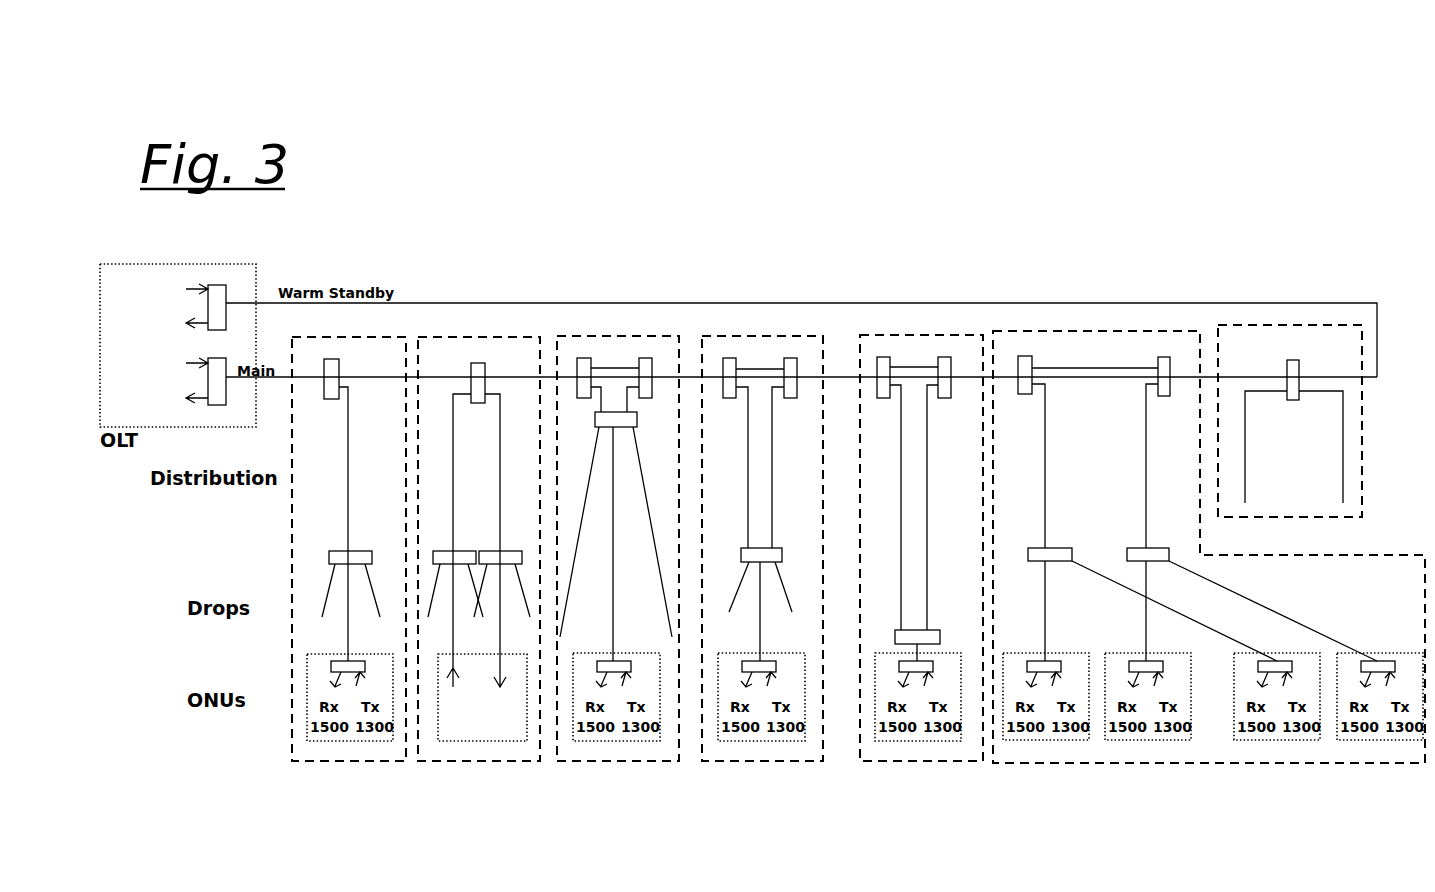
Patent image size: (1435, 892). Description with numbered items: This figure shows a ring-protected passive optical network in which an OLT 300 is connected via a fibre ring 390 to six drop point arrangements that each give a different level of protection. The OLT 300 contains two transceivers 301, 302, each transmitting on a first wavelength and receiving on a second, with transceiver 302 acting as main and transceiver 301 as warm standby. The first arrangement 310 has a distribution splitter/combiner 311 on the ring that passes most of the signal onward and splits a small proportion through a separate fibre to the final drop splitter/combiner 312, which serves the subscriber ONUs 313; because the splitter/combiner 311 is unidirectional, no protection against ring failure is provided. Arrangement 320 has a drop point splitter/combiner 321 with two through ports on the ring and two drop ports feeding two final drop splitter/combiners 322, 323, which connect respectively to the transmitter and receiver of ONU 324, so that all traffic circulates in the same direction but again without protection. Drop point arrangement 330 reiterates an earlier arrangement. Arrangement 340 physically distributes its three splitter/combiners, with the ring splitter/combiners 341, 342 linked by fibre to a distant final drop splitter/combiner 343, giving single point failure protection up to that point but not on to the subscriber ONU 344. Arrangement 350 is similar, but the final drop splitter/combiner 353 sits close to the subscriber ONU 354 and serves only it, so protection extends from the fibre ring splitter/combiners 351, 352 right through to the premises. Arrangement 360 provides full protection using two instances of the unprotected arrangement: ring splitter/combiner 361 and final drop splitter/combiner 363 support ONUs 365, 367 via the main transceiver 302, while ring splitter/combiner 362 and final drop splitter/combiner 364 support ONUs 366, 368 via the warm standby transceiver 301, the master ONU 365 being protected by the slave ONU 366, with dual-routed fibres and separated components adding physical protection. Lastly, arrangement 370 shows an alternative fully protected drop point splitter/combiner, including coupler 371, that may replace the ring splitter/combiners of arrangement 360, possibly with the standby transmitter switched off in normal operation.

The OLT 300 is at (178, 337).
The transceiver 301 is at (216, 298).
The transceiver 302 is at (215, 392).
The first drop point arrangement 310 is at (349, 562).
The distribution splitter/combiner 311 is at (349, 506).
The final drop splitter/combiner 312 is at (344, 571).
The subscriber ONU 313 is at (350, 707).
The drop point arrangement 320 is at (479, 562).
The drop point splitter/combiner 321 is at (484, 521).
The second final drop splitter/combiner 322 is at (453, 573).
The first final drop splitter/combiner 323 is at (502, 573).
The ONU 324 is at (482, 707).
The drop point arrangement 330 is at (618, 560).
The drop point arrangement 340 is at (762, 560).
The ring splitter/combiner 341 is at (737, 444).
The ring splitter/combiner 342 is at (783, 444).
The final drop splitter/combiner 343 is at (773, 604).
The subscriber ONU 344 is at (761, 707).
The drop point arrangement 350 is at (921, 559).
The fibre ring splitter/combiner 351 is at (894, 485).
The fibre ring splitter/combiner 352 is at (938, 485).
The final drop splitter/combiner 353 is at (933, 637).
The subscriber ONU 354 is at (918, 707).
The drop point arrangement 360 is at (1209, 560).
The ring splitter/combiner 361 is at (1050, 444).
The ring splitter/combiner 362 is at (1139, 444).
The final drop splitter/combiner 363 is at (1142, 593).
The final drop splitter/combiner 364 is at (1252, 593).
The master ONU 365 is at (1046, 707).
The slave ONU 366 is at (1148, 707).
The master ONU 367 is at (1277, 707).
The slave ONU 368 is at (1380, 707).
The drop point arrangement 370 is at (1290, 436).
The tap coupler 371 is at (1294, 425).
The fibre ring 390 is at (801, 329).